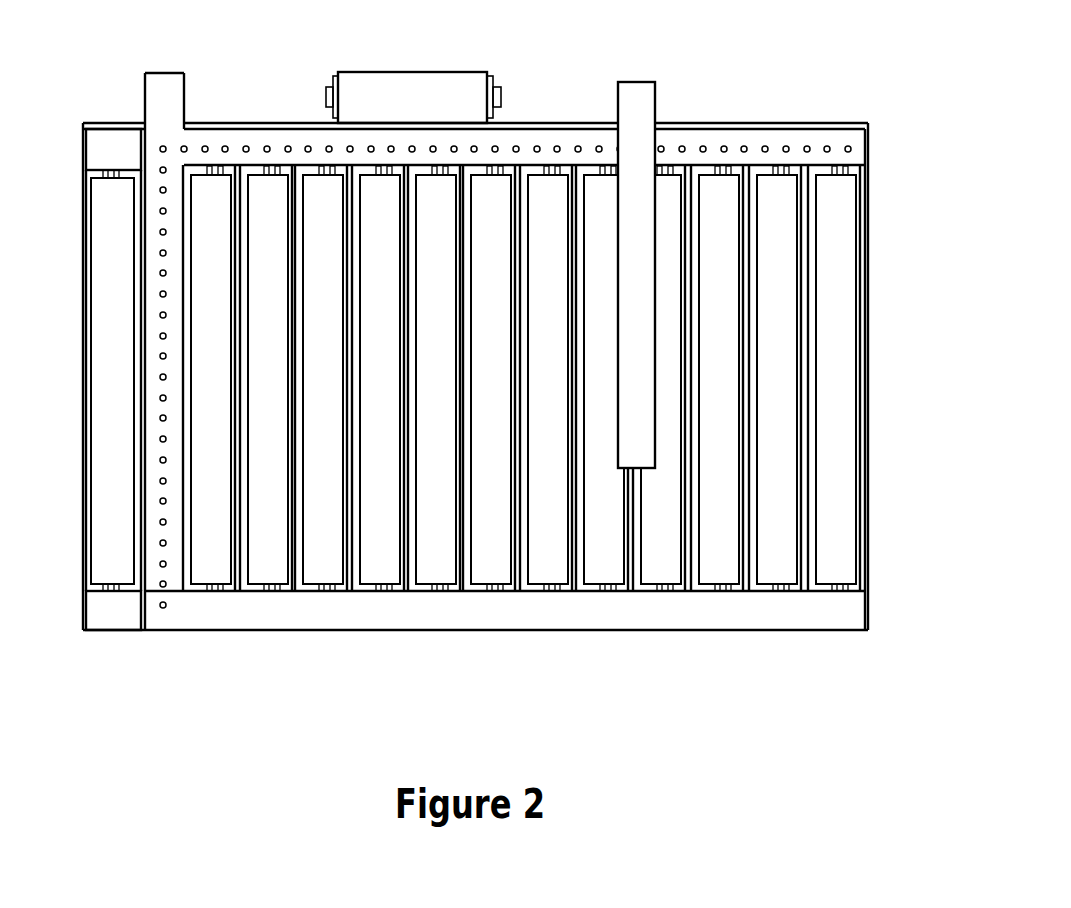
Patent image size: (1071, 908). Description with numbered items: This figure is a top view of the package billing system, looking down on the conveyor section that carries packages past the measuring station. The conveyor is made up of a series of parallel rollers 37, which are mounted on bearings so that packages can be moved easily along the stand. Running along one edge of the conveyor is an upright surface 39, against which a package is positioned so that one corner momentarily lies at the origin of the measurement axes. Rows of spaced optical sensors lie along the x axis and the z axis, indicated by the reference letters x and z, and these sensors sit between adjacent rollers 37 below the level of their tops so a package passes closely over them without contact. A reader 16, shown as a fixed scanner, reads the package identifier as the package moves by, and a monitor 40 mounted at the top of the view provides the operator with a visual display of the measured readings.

The reader 16 is at (647, 419).
The rollers 37 is at (849, 510).
The upright surface 39 is at (860, 122).
The monitor 40 is at (455, 85).
The x axis x is at (247, 146).
The z axis z is at (150, 373).